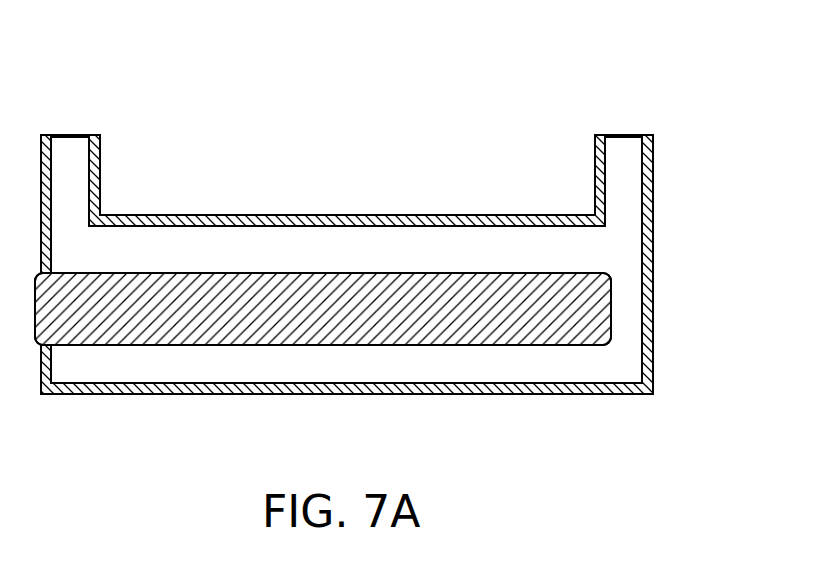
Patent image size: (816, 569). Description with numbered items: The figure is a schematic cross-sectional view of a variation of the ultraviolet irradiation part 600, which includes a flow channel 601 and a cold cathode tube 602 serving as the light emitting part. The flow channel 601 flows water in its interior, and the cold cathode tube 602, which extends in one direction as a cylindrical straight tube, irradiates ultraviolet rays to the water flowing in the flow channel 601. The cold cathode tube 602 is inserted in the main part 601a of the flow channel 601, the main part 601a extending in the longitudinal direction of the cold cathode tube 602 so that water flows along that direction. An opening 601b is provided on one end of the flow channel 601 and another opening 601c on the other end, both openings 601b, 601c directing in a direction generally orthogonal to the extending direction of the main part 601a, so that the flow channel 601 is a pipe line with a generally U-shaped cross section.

The ultraviolet irradiation part 600 is at (472, 105).
The flow channel 601 is at (397, 222).
The main part 601a is at (338, 215).
The opening 601b is at (76, 135).
The opening 601c is at (620, 135).
The cold cathode tube 602 is at (347, 325).